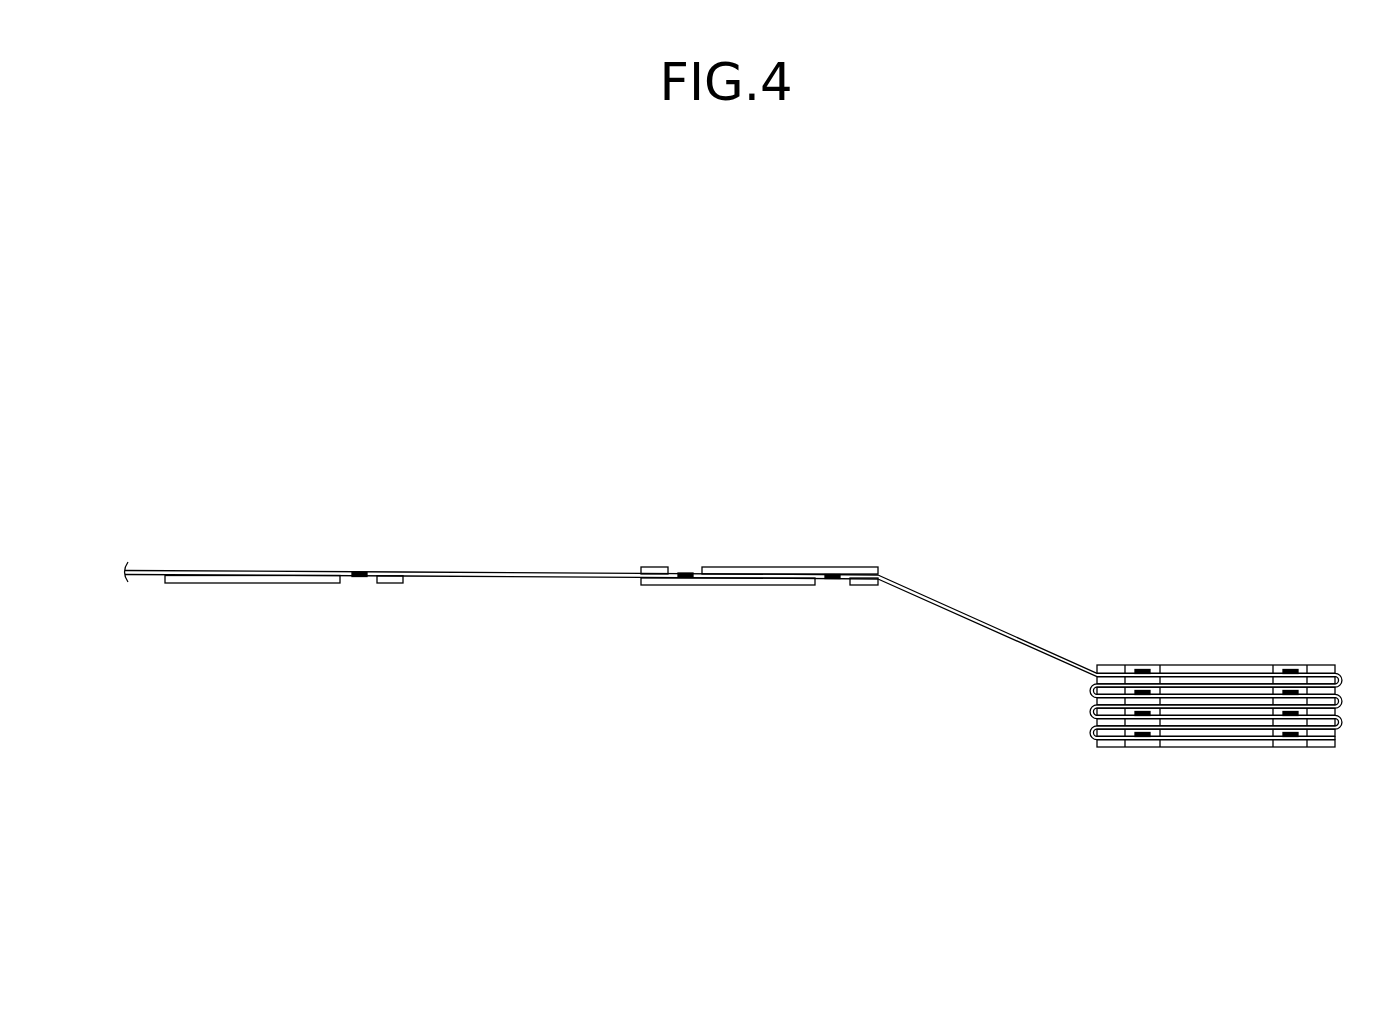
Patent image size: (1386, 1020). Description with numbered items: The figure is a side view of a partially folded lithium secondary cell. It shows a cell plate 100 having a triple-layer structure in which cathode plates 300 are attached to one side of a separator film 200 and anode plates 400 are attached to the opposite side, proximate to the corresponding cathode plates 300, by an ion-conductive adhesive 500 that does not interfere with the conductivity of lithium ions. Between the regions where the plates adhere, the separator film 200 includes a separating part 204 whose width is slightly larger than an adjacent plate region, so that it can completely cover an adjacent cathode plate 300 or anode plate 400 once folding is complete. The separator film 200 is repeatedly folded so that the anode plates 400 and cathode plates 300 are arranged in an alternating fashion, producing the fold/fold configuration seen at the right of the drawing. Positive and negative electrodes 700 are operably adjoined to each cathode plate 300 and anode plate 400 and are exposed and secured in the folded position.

The cell plate 100 is at (733, 659).
The separator film 200 is at (507, 562).
The separating part 204 is at (556, 577).
The cathode plates 300 is at (778, 567).
The anode plates 400 is at (268, 583).
The ion-conductive adhesive 500 is at (1144, 669).
The positive and negative electrodes 700 is at (366, 578).